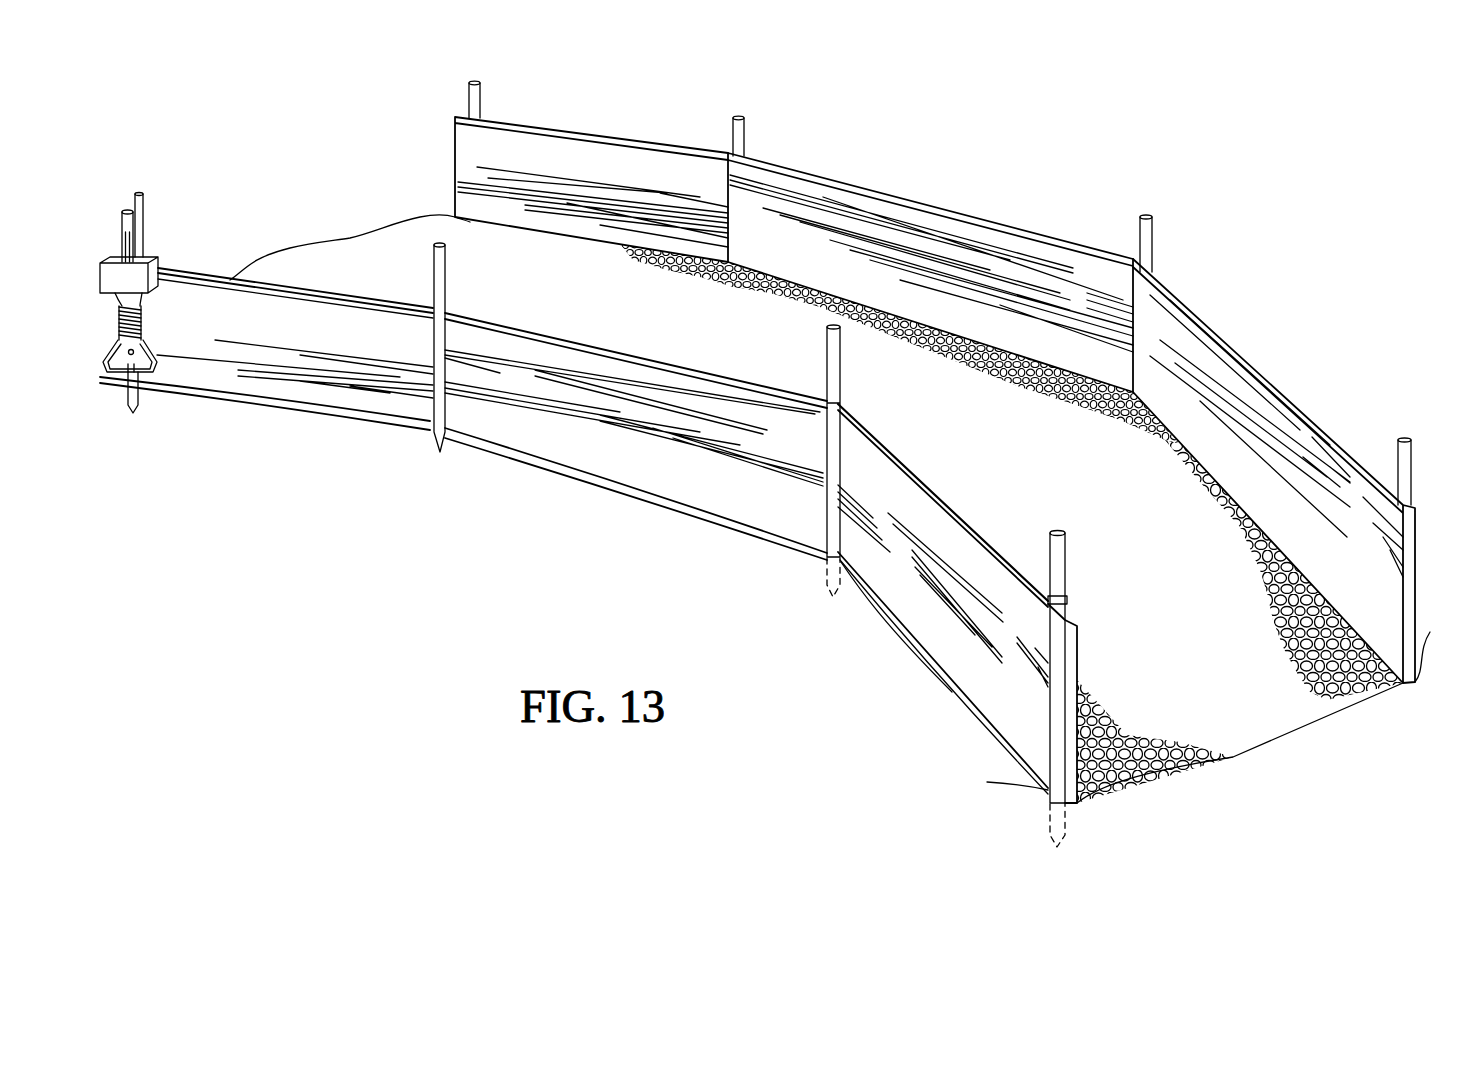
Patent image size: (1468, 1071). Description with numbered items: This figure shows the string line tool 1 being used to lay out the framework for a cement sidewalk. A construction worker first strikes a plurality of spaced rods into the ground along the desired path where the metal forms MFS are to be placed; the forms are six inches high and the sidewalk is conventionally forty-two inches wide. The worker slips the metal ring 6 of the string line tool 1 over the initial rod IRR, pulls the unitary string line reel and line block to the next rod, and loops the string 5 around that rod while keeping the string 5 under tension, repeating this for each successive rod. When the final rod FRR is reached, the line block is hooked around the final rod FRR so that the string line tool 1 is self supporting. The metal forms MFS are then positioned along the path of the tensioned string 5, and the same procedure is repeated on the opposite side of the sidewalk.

The string line tool 1 is at (158, 253).
The string 5 is at (978, 520).
The metal ring 6 is at (1068, 603).
The final rod FRR is at (143, 208).
The initial rod IRR is at (1067, 563).
The metal forms MFS is at (570, 150).